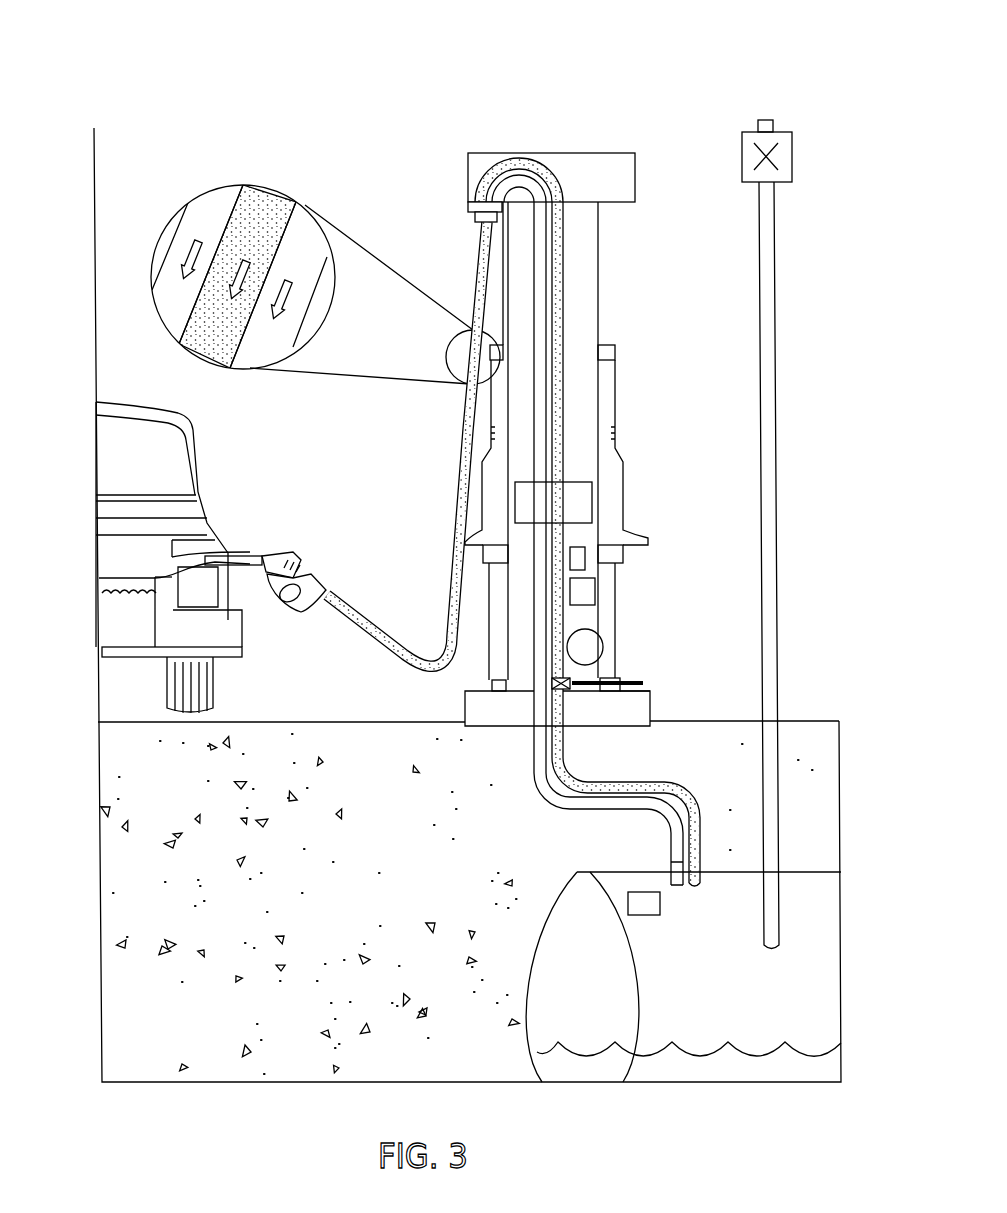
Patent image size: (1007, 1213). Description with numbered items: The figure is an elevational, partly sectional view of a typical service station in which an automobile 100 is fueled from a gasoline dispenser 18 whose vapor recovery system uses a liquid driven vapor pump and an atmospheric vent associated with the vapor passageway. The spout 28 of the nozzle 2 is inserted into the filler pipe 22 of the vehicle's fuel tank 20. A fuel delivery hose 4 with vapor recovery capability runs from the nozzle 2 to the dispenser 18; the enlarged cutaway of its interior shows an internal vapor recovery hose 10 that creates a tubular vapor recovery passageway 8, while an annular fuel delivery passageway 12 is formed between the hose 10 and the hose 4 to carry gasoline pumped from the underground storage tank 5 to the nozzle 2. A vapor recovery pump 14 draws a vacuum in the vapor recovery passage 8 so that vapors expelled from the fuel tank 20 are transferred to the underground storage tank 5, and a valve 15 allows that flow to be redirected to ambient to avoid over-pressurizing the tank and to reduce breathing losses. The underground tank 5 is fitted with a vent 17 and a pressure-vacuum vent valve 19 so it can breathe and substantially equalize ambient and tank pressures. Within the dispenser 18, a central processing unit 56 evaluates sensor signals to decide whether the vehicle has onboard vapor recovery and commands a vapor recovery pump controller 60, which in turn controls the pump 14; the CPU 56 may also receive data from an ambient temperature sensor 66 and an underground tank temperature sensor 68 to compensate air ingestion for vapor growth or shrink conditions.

The nozzle 2 is at (295, 562).
The fuel delivery hose 4 is at (172, 217).
The underground storage tank 5 is at (710, 987).
The vapor recovery passageway 8 is at (187, 343).
The internal vapor recovery hose 10 is at (243, 190).
The annular fuel delivery passageway 12 is at (222, 207).
The vapor recovery pump 14 is at (585, 648).
The valve 15 is at (643, 684).
The vent 17 is at (776, 318).
The gasoline dispenser 18 is at (652, 282).
The pressure-vacuum vent valve 19 is at (792, 150).
The fuel tank 20 is at (145, 641).
The filler pipe 22 is at (173, 612).
The spout 28 is at (250, 552).
The central processing unit 56 is at (587, 593).
The vapor recovery pump controller 60 is at (580, 500).
The ambient temperature sensor 66 is at (580, 563).
The underground tank temperature sensor 68 is at (650, 900).
The automobile 100 is at (160, 483).